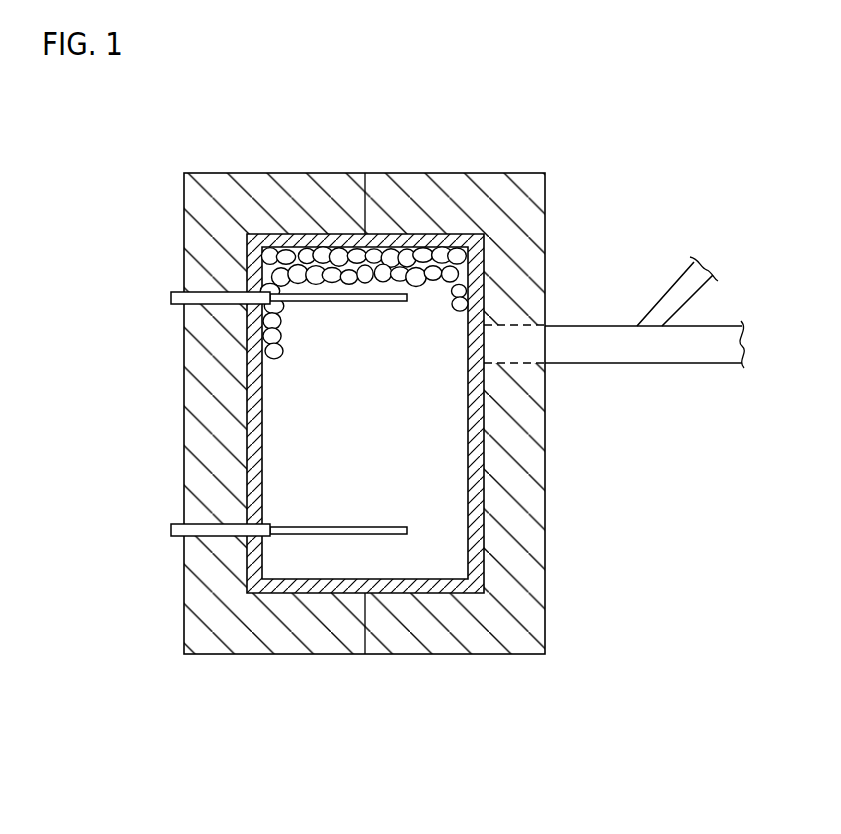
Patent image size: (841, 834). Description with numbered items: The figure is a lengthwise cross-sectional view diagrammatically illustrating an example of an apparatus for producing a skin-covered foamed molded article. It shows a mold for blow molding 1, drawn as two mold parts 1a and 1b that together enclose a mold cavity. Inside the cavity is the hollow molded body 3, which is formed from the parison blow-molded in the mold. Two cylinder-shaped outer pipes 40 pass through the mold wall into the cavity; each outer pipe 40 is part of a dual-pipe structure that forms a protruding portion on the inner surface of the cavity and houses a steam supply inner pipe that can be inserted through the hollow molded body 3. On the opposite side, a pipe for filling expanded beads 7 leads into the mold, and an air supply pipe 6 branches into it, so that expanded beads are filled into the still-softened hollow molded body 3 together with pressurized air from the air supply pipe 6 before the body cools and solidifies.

The mold for blow molding 1 is at (364, 485).
The first furnace body portion 1a is at (288, 655).
The second furnace body portion 1b is at (405, 655).
The hollow molded body 3 is at (247, 593).
The outer pipe 40 is at (177, 296).
The air supply pipe 6 is at (686, 281).
The pipe for filling expanded beads 7 is at (683, 353).